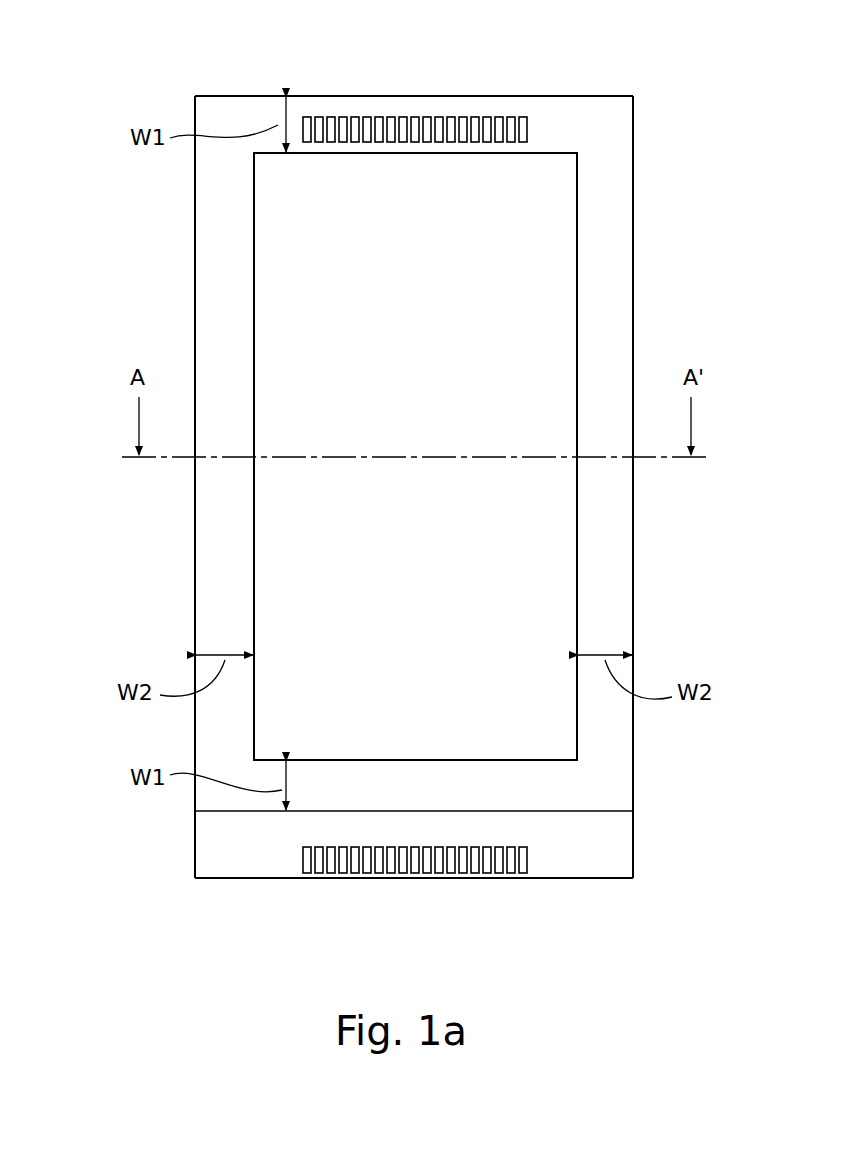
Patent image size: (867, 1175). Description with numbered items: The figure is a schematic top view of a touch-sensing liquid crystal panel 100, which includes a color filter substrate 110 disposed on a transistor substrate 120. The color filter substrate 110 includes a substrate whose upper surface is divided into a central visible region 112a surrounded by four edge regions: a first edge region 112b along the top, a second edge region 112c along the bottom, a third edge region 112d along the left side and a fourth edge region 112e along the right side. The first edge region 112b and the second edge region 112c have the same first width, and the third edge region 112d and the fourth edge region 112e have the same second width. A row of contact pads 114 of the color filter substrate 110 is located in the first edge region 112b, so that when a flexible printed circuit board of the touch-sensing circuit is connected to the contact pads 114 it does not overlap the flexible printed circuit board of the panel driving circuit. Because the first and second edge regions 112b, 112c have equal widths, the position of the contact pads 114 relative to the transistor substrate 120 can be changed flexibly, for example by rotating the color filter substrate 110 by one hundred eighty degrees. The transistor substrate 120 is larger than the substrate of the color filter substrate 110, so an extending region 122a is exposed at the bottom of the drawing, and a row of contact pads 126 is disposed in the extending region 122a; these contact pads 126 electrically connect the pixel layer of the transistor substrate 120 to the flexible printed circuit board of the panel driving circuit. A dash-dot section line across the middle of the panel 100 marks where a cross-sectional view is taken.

The touch-sensing liquid crystal panel 100 is at (100, 26).
The color filter substrate 110 is at (635, 125).
The visible region 112a is at (443, 327).
The first edge region 112b is at (572, 112).
The second edge region 112c is at (568, 792).
The third edge region 112d is at (207, 542).
The fourth edge region 112e is at (618, 522).
The contact pads 114 is at (366, 117).
The transistor substrate 120 is at (635, 848).
The extending region 122a is at (231, 858).
The contact pads 126 is at (413, 876).